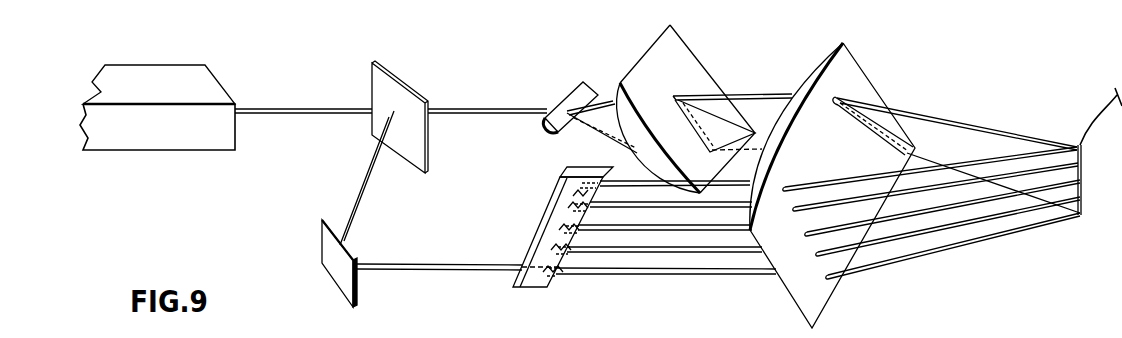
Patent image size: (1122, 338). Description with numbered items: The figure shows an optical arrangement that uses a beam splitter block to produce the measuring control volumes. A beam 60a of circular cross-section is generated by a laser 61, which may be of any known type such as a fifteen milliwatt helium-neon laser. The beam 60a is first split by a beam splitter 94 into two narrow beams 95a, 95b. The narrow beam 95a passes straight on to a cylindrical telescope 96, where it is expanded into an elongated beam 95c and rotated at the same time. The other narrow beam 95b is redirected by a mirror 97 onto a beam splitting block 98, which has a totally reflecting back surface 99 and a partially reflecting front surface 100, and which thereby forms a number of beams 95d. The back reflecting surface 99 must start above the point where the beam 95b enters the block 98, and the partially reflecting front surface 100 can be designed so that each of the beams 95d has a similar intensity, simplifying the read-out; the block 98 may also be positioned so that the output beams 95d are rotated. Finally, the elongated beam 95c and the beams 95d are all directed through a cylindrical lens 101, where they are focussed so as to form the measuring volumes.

The laser 61 is at (223, 86).
The beam 60a is at (316, 115).
The beam splitter 94 is at (412, 92).
The narrow beam 95a is at (505, 115).
The narrow beam 95b is at (368, 176).
The mirror 97 is at (350, 307).
The beams 95d is at (700, 275).
The beam splitting block 98 is at (538, 243).
The totally reflecting back surface 99 is at (560, 188).
The partially reflecting front surface 100 is at (556, 222).
The cylindrical telescope 96 is at (557, 77).
The elongated beam 95c is at (757, 92).
The cylindrical lens 101 is at (871, 81).